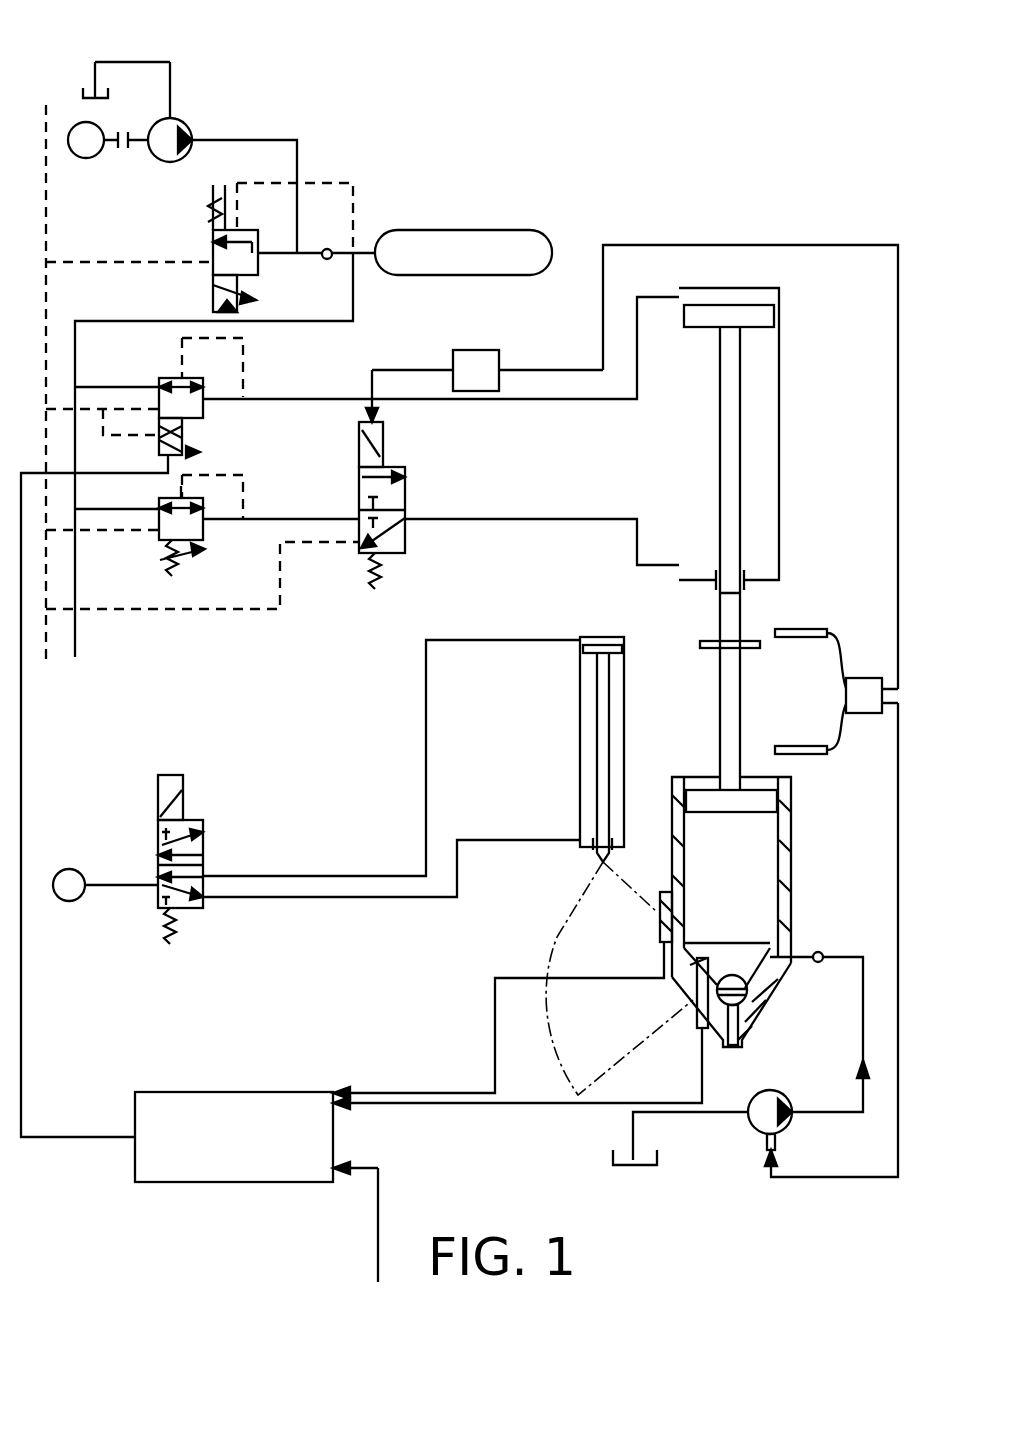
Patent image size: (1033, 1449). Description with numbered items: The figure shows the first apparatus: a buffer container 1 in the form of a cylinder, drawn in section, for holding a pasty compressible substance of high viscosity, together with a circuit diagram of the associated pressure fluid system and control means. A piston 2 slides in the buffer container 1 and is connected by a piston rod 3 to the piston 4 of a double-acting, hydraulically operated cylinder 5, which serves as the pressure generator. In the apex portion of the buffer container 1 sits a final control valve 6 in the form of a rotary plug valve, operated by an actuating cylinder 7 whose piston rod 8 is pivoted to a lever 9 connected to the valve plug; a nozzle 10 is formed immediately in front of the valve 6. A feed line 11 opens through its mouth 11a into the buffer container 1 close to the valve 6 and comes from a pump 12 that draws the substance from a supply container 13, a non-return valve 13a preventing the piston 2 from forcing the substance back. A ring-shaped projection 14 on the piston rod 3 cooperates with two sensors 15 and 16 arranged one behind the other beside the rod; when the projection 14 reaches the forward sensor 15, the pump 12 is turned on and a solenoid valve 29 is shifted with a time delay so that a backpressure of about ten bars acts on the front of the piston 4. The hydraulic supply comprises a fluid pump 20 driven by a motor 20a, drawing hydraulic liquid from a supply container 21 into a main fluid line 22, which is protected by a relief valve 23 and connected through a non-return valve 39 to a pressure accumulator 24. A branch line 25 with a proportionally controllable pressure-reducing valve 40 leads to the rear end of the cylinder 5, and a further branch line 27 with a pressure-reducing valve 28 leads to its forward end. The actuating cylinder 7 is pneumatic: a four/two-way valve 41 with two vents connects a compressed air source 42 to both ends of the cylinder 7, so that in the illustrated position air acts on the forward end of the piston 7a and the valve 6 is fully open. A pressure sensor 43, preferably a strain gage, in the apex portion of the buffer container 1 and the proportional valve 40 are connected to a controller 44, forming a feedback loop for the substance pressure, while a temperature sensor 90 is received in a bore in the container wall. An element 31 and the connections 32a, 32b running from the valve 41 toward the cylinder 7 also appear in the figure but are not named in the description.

The buffer container 1 is at (785, 887).
The piston 2 is at (760, 800).
The piston rod 3 is at (740, 598).
The piston 4 is at (763, 315).
The double-acting fluid-operable cylinder 5 is at (763, 448).
The final control valve 6 is at (747, 997).
The actuating cylinder 7 is at (613, 765).
The piston 7a is at (620, 650).
The piston rod 8 is at (604, 728).
The lever 9 is at (622, 912).
The nozzle 10 is at (733, 1047).
The feed line 11 is at (862, 1013).
The mouth 11a is at (768, 943).
The pump 12 is at (755, 1128).
The supply container 13 is at (613, 1150).
The non-return valve 13a is at (822, 950).
The projection 14 is at (747, 647).
The sensor 15 is at (810, 753).
The sensor 16 is at (782, 632).
The fluid pump 20 is at (182, 127).
The motor 20a is at (100, 127).
The supply container 21 is at (108, 95).
The main fluid line 22 is at (247, 138).
The relief valve 23 is at (257, 230).
The pressure accumulator 24 is at (457, 248).
The branch line 25 is at (322, 398).
The further branch line 27 is at (295, 520).
The pressure-reducing valve 28 is at (190, 527).
The solenoid valve 29 is at (360, 497).
The controller 31 is at (493, 386).
The nozzle supply line 32a is at (426, 828).
The nozzle return line 32b is at (530, 840).
The non-return valve 39 is at (332, 248).
The proportionally controllable pressure-reducing valve 40 is at (193, 407).
The four/two-way valve 41 is at (183, 822).
The compressed air source 42 is at (77, 870).
The pressure sensor 43 is at (705, 997).
The controller 44 is at (173, 1172).
The temperature sensor 90 is at (660, 933).